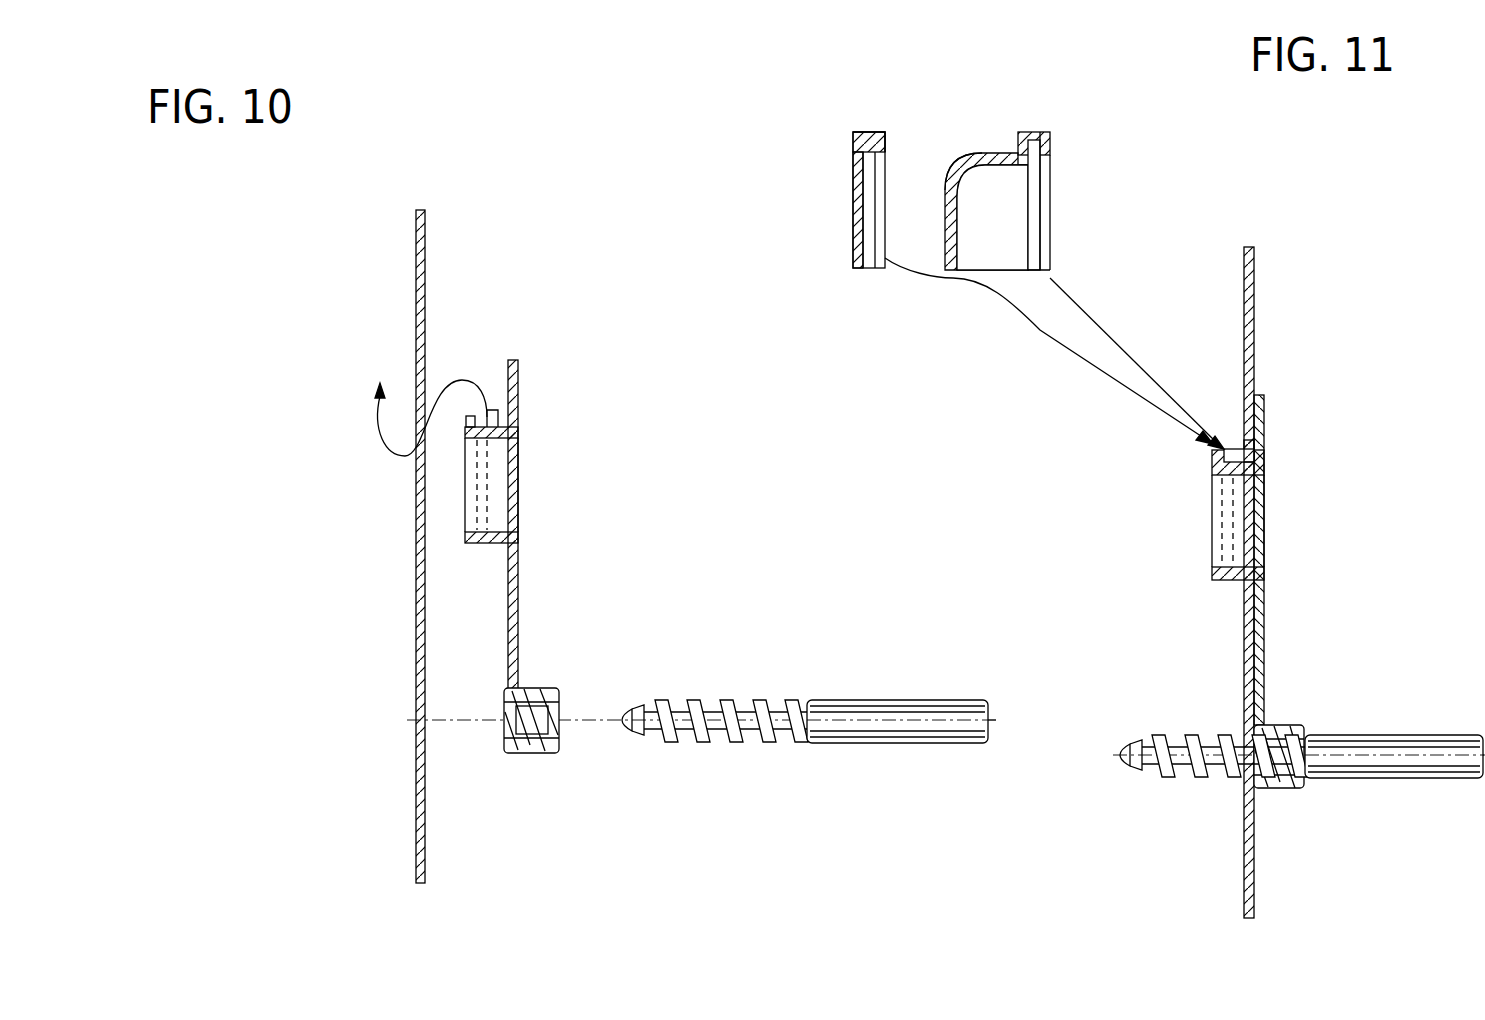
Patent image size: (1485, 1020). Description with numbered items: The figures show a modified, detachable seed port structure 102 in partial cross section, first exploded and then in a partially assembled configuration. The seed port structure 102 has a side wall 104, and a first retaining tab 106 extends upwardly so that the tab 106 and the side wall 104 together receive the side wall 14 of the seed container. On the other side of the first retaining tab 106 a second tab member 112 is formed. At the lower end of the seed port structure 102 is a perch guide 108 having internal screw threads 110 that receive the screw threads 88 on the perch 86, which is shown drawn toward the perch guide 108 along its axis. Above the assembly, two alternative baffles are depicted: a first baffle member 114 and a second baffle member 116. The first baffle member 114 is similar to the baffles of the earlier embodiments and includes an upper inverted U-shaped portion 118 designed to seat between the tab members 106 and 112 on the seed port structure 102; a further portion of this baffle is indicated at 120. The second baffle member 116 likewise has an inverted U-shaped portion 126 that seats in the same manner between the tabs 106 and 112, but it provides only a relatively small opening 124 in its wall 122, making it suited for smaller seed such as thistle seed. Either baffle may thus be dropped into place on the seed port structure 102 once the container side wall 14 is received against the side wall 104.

In FIG. 10, the side wall 14 is at (415, 287).
In FIG. 11, the side wall 14 is at (1255, 348).
In FIG. 10, the perch 86 is at (811, 734).
In FIG. 11, the perch 86 is at (1424, 737).
In FIG. 10, the screw threads 88 is at (737, 743).
In FIG. 10, the seed port structure 102 is at (703, 552).
In FIG. 10, the side wall 104 is at (519, 380).
In FIG. 10, the first retaining tab 106 is at (497, 412).
In FIG. 10, the perch guide 108 is at (534, 706).
In FIG. 11, the perch guide 108 is at (1283, 735).
In FIG. 10, the internal screw threads 110 is at (559, 745).
In FIG. 10, the second tab member 112 is at (466, 418).
In FIG. 11, the first baffle member 114 is at (1058, 186).
In FIG. 11, the second baffle member 116 is at (891, 191).
In FIG. 11, the inverted U-shaped portion 118 is at (1051, 135).
In FIG. 11, the cap wall 120 is at (957, 210).
In FIG. 11, the wall 122 is at (857, 252).
In FIG. 11, the opening 124 is at (866, 210).
In FIG. 11, the inverted U-shaped portion 126 is at (886, 135).